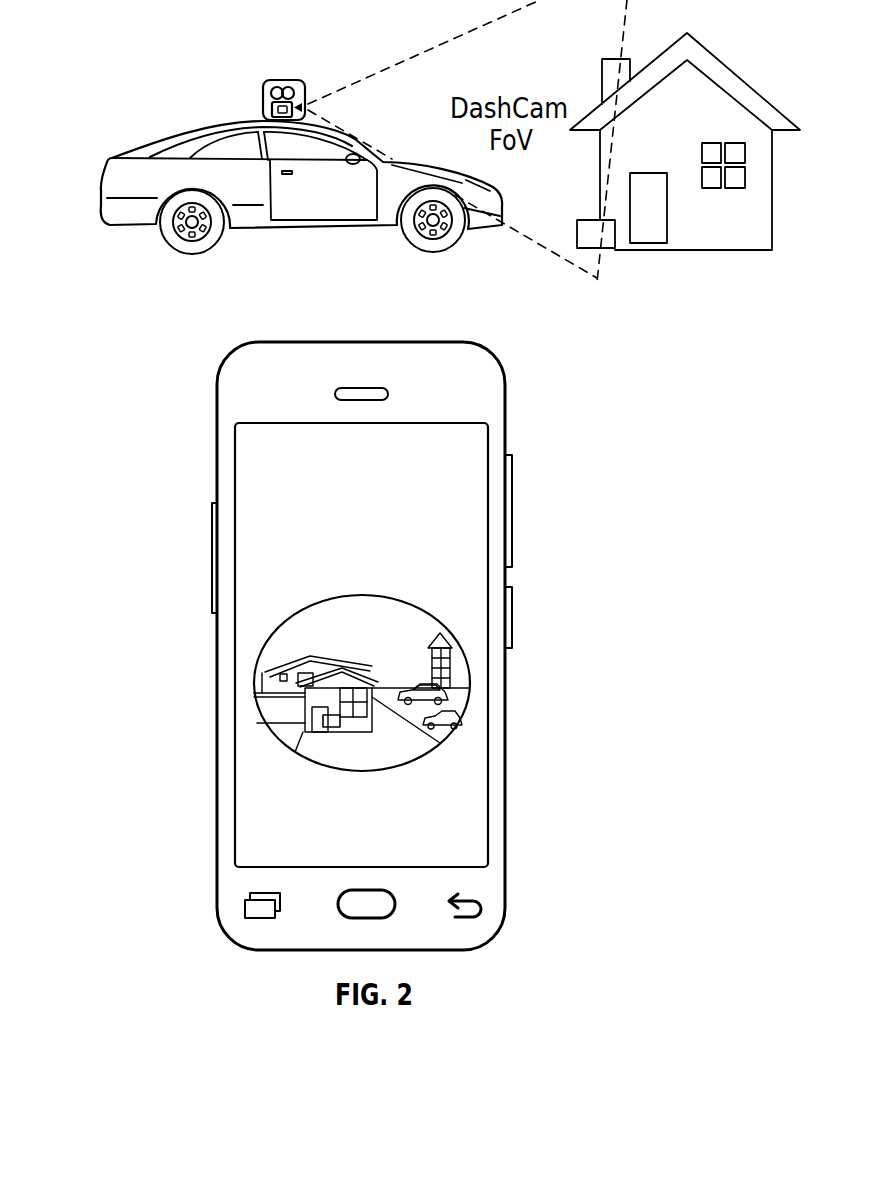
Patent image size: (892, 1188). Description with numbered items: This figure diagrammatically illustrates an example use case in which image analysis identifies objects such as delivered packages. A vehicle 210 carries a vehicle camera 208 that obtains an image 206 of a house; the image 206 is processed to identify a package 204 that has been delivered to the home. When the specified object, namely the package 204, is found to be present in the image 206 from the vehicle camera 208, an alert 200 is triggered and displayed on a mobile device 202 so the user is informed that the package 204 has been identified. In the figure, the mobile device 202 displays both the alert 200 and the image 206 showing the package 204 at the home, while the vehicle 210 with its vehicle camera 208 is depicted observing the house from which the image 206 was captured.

The alert 200 is at (447, 481).
The mobile device 202 is at (505, 442).
The package 204 is at (607, 248).
The image 206 is at (446, 619).
The vehicle camera 208 is at (293, 80).
The vehicle 210 is at (146, 62).